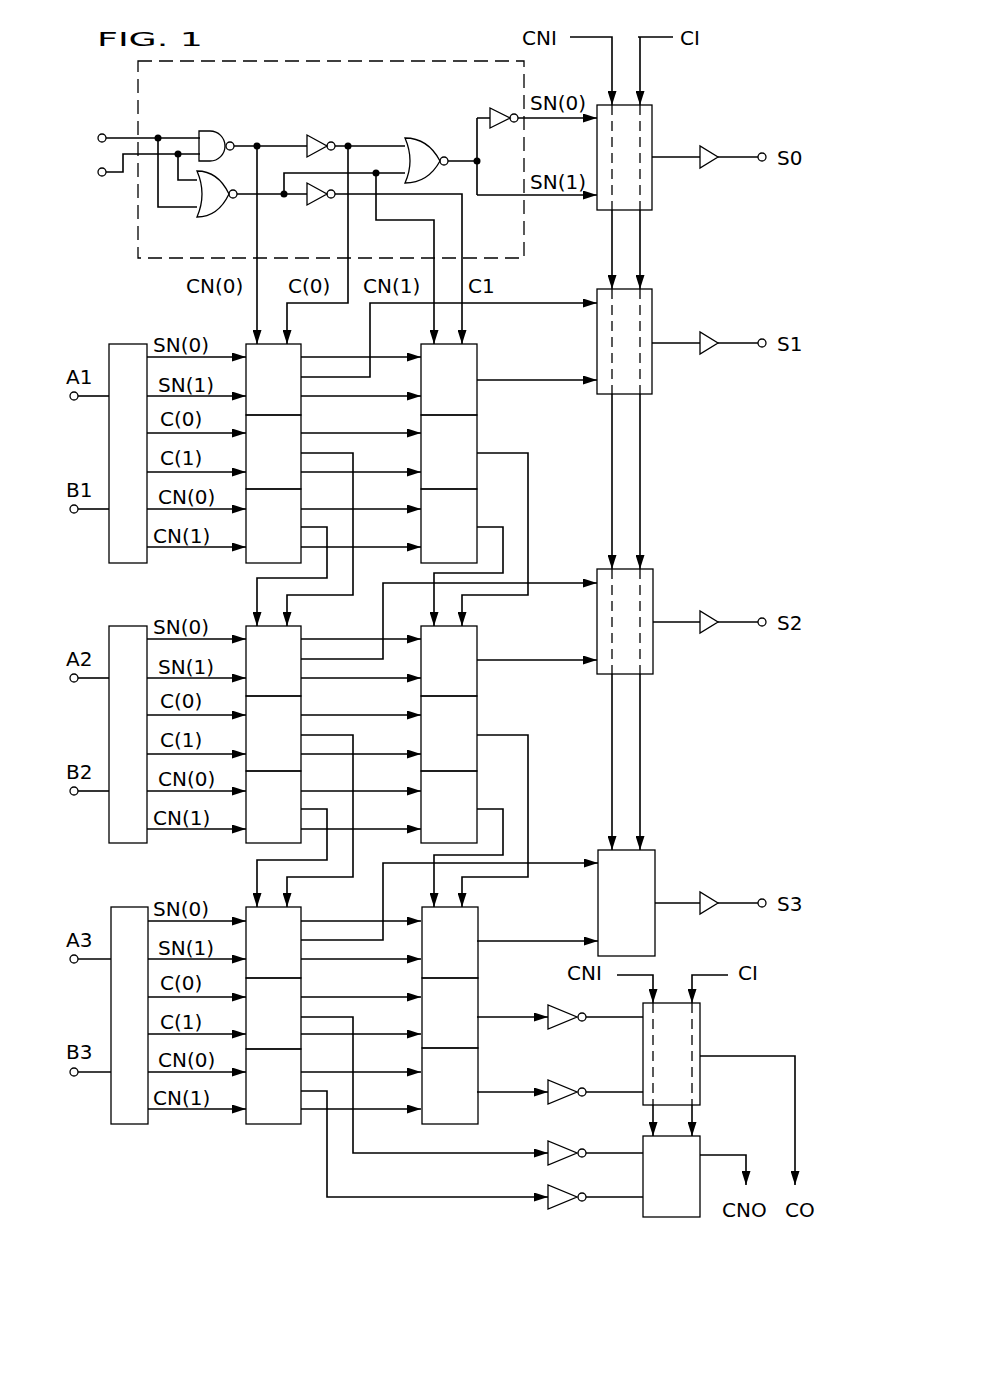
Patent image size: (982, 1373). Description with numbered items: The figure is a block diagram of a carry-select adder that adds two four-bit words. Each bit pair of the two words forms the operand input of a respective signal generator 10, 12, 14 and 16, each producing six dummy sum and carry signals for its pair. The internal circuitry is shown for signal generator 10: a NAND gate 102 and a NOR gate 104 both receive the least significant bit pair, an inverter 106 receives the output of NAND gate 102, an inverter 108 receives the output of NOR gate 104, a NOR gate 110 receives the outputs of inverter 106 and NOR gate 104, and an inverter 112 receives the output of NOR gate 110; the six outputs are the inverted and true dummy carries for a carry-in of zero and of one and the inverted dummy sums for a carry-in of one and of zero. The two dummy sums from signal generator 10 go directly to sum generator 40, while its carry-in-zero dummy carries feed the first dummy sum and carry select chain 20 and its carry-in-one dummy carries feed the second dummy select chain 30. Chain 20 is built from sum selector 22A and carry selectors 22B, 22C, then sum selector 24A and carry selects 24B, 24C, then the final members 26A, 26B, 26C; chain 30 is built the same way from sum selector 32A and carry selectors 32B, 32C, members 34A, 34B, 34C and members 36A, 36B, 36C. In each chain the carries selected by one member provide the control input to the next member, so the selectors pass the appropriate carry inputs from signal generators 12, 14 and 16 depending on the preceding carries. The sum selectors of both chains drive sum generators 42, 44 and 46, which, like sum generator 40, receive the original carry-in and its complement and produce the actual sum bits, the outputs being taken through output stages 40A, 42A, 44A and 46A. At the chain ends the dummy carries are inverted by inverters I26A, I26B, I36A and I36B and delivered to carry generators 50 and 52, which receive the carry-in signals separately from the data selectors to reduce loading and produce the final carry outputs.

The signal generator 10 is at (328, 60).
The NAND gate 102 is at (212, 130).
The NOR gate 104 is at (208, 216).
The inverter 106 is at (325, 140).
The inverter 108 is at (316, 200).
The NOR gate 110 is at (420, 138).
The inverter 112 is at (504, 108).
The signal generator 12 is at (143, 469).
The signal generator 14 is at (143, 751).
The signal generator 16 is at (145, 1031).
The first dummy sum and carry select chain 20 is at (236, 785).
The first sum selector 22A is at (273, 379).
The carry selector 22B is at (273, 452).
The carry selector 22C is at (273, 526).
The sum selector 24A is at (273, 661).
The carry select 24B is at (273, 733).
The carry select 24C is at (273, 807).
The sum selector 26A is at (273, 942).
The carry selector 26B is at (273, 1013).
The sum select multiplexer section 26C is at (273, 1086).
The second dummy sum and carry select chain 30 is at (410, 784).
The first sum selector 32A is at (449, 379).
The carry selector 32B is at (449, 452).
The carry selector 32C is at (449, 526).
The sum selector 34A is at (449, 661).
The carry select 34B is at (449, 733).
The carry select multiplexer section 34C is at (449, 807).
The sum selector 36A is at (450, 942).
The carry select 36B is at (450, 1013).
The carry select multiplexer section 36C is at (450, 1086).
The sum generator 40 is at (647, 185).
The output buffer 40A is at (718, 156).
The sum generator 42 is at (648, 375).
The output buffer 42A is at (718, 341).
The sum generator 44 is at (653, 650).
The output buffer 44A is at (718, 620).
The sum generator 46 is at (647, 884).
The output buffer 46A is at (716, 898).
The carry generator 50 is at (690, 1047).
The carry generator 52 is at (687, 1158).
The inverter I36A is at (552, 1003).
The inverter I36B is at (567, 1080).
The inverter I26A is at (553, 1142).
The inverter I26B is at (548, 1190).